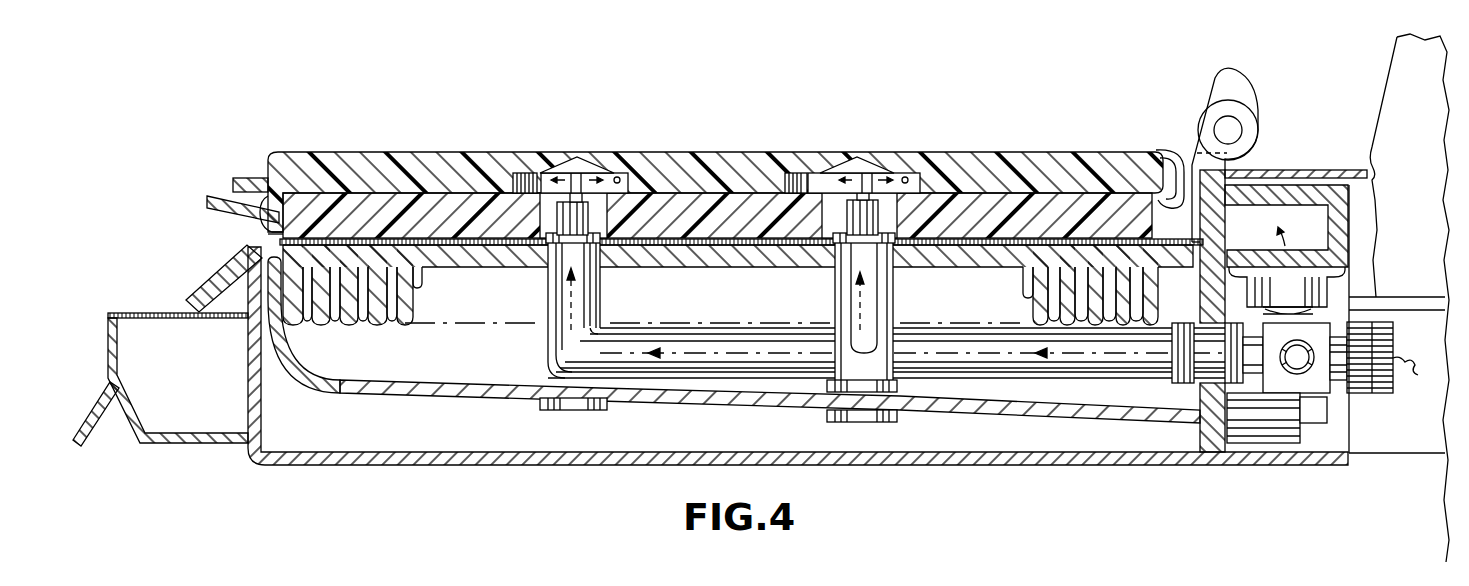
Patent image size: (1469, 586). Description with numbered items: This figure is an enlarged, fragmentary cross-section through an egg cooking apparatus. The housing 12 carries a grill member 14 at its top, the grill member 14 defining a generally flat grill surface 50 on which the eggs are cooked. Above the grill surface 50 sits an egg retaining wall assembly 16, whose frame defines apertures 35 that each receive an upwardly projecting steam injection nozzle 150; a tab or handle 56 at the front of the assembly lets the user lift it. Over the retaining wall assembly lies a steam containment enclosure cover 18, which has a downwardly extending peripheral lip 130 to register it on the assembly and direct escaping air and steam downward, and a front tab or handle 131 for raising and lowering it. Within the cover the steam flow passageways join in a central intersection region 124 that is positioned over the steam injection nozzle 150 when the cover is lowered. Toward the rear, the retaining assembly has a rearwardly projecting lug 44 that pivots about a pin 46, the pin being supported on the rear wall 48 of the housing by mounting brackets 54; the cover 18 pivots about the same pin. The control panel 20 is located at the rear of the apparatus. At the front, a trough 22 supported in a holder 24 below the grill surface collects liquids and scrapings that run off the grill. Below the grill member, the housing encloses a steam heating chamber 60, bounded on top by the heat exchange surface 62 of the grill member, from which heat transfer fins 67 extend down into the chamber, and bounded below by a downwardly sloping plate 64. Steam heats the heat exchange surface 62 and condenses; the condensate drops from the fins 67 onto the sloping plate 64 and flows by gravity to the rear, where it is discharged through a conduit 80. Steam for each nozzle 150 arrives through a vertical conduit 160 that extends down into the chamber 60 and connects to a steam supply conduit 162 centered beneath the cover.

The housing 12 is at (1105, 468).
The grill member 14 is at (266, 236).
The egg retaining wall assembly 16 is at (428, 188).
The steam containment enclosure cover 18 is at (392, 150).
The control panel 20 is at (1376, 104).
The trough 22 is at (156, 313).
The holder 24 is at (129, 447).
The apertures 35 is at (540, 190).
The rearwardly projecting lugs 44 is at (1178, 140).
The pins 46 is at (1243, 131).
The rear wall 48 is at (1218, 222).
The grill surface 50 is at (268, 240).
The mounting brackets 54 is at (1244, 148).
The tab or handle 56 is at (208, 203).
The steam heating chamber 60 is at (442, 355).
The heat exchange surface 62 is at (468, 268).
The downwardly sloping plate 64 is at (345, 390).
The heat transfer fins 67 is at (393, 323).
The conduit 80 is at (1305, 440).
The central intersection region 124 is at (615, 165).
The peripheral lip 130 is at (265, 200).
The tab or handle 131 is at (240, 180).
The steam injection nozzle 150 is at (845, 220).
The vertical conduit 160 is at (593, 298).
The steam supply conduit 162 is at (723, 335).